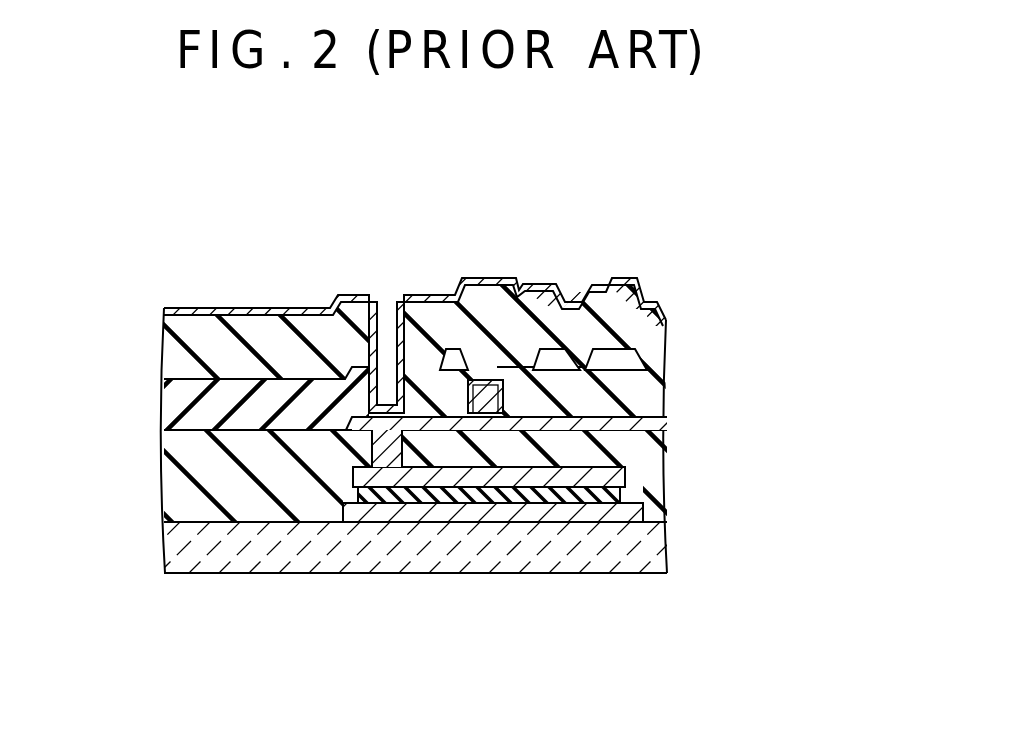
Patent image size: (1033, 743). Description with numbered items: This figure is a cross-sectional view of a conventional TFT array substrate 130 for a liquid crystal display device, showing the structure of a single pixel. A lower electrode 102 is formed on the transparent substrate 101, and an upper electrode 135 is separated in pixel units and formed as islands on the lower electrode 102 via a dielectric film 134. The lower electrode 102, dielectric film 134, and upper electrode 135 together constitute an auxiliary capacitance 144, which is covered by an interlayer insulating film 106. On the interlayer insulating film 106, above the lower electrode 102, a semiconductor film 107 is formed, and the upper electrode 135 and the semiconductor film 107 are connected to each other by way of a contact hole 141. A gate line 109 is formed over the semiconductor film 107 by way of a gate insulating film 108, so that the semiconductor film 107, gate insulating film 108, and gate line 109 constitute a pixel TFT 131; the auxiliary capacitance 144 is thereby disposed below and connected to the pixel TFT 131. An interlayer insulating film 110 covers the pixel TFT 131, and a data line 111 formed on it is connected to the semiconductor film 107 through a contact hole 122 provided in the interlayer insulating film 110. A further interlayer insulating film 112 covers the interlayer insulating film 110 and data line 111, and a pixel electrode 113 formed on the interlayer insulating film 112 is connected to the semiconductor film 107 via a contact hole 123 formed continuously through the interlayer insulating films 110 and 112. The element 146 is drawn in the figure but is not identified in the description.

The transparent substrate 101 is at (180, 540).
The lower electrode 102 is at (645, 514).
The interlayer insulating film 106 is at (180, 472).
The semiconductor film 107 is at (662, 424).
The gate insulating film 108 is at (490, 395).
The gate line 109 is at (488, 400).
The interlayer insulating film 110 is at (180, 405).
The data line 111 is at (640, 356).
The interlayer insulating film 112 is at (180, 348).
The pixel electrode 113 is at (180, 306).
The contact hole 122 is at (580, 405).
The contact hole 123 is at (385, 335).
The TFT array substrate 130 is at (675, 210).
The pixel TFT 131 is at (527, 402).
The dielectric film 134 is at (622, 495).
The upper electrode 135 is at (628, 476).
The contact hole 141 is at (386, 474).
The auxiliary capacitance 144 is at (516, 460).
The contact plug 146 is at (396, 457).